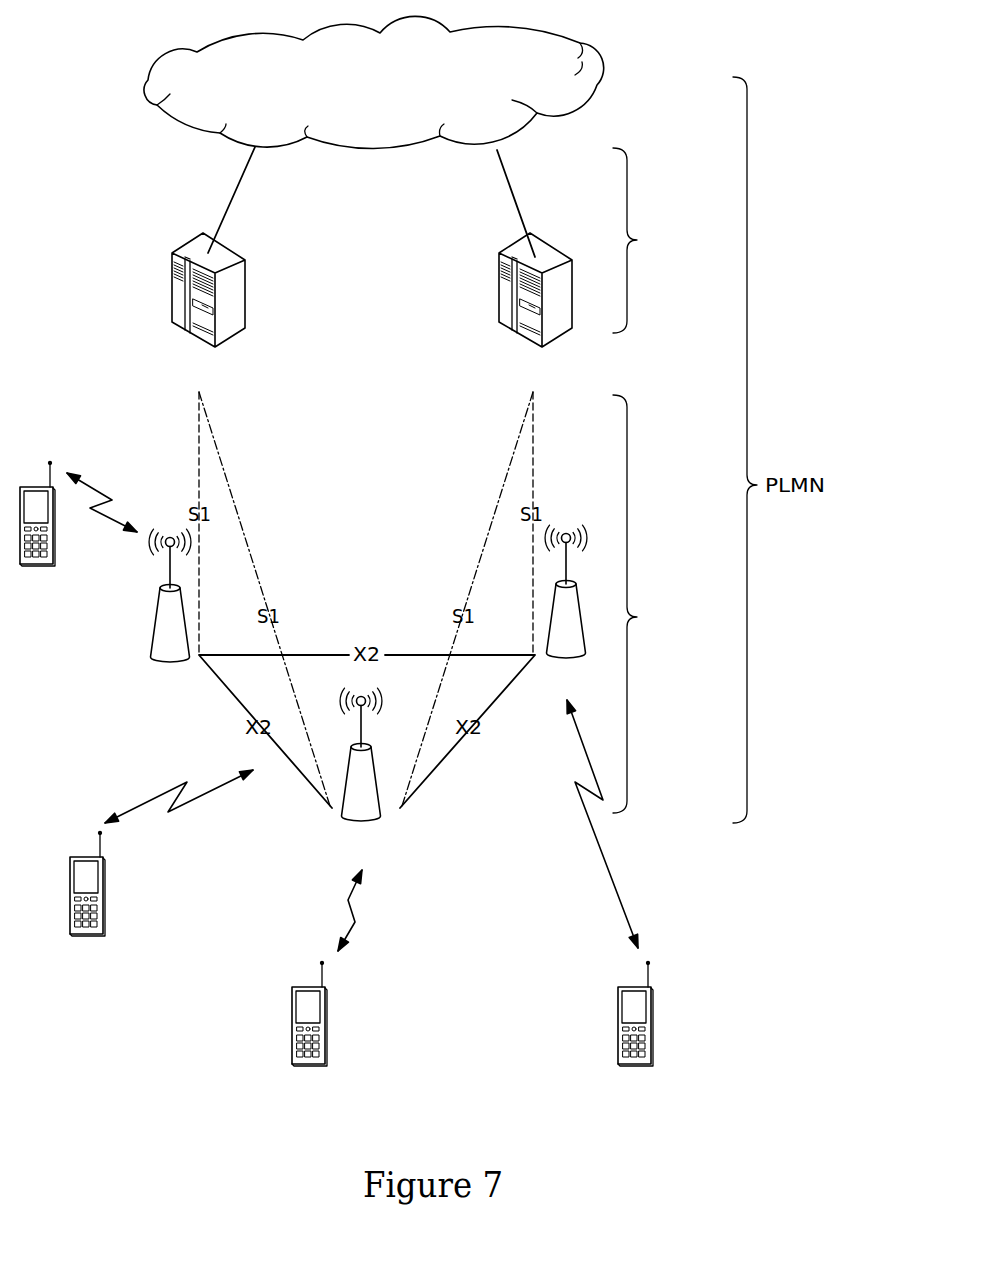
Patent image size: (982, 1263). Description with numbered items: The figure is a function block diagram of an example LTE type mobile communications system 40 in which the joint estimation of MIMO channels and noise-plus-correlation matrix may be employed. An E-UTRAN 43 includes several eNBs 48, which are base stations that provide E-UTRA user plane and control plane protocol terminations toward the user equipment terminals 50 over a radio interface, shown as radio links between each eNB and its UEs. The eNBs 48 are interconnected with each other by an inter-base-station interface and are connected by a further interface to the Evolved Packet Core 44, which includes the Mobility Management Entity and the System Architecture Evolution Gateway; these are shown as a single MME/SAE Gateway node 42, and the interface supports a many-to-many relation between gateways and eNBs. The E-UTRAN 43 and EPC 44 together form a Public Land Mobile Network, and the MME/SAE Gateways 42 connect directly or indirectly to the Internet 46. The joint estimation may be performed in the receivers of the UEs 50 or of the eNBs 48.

The LTE type mobile communications system 40 is at (76, 259).
The MME/SAE Gateway 42 is at (233, 296).
The E-UTRAN 43 is at (676, 604).
The Evolved Packet Core 44 is at (652, 240).
The Internet 46 is at (580, 45).
The eNB 48 is at (163, 625).
The user equipment terminal 50 is at (30, 485).